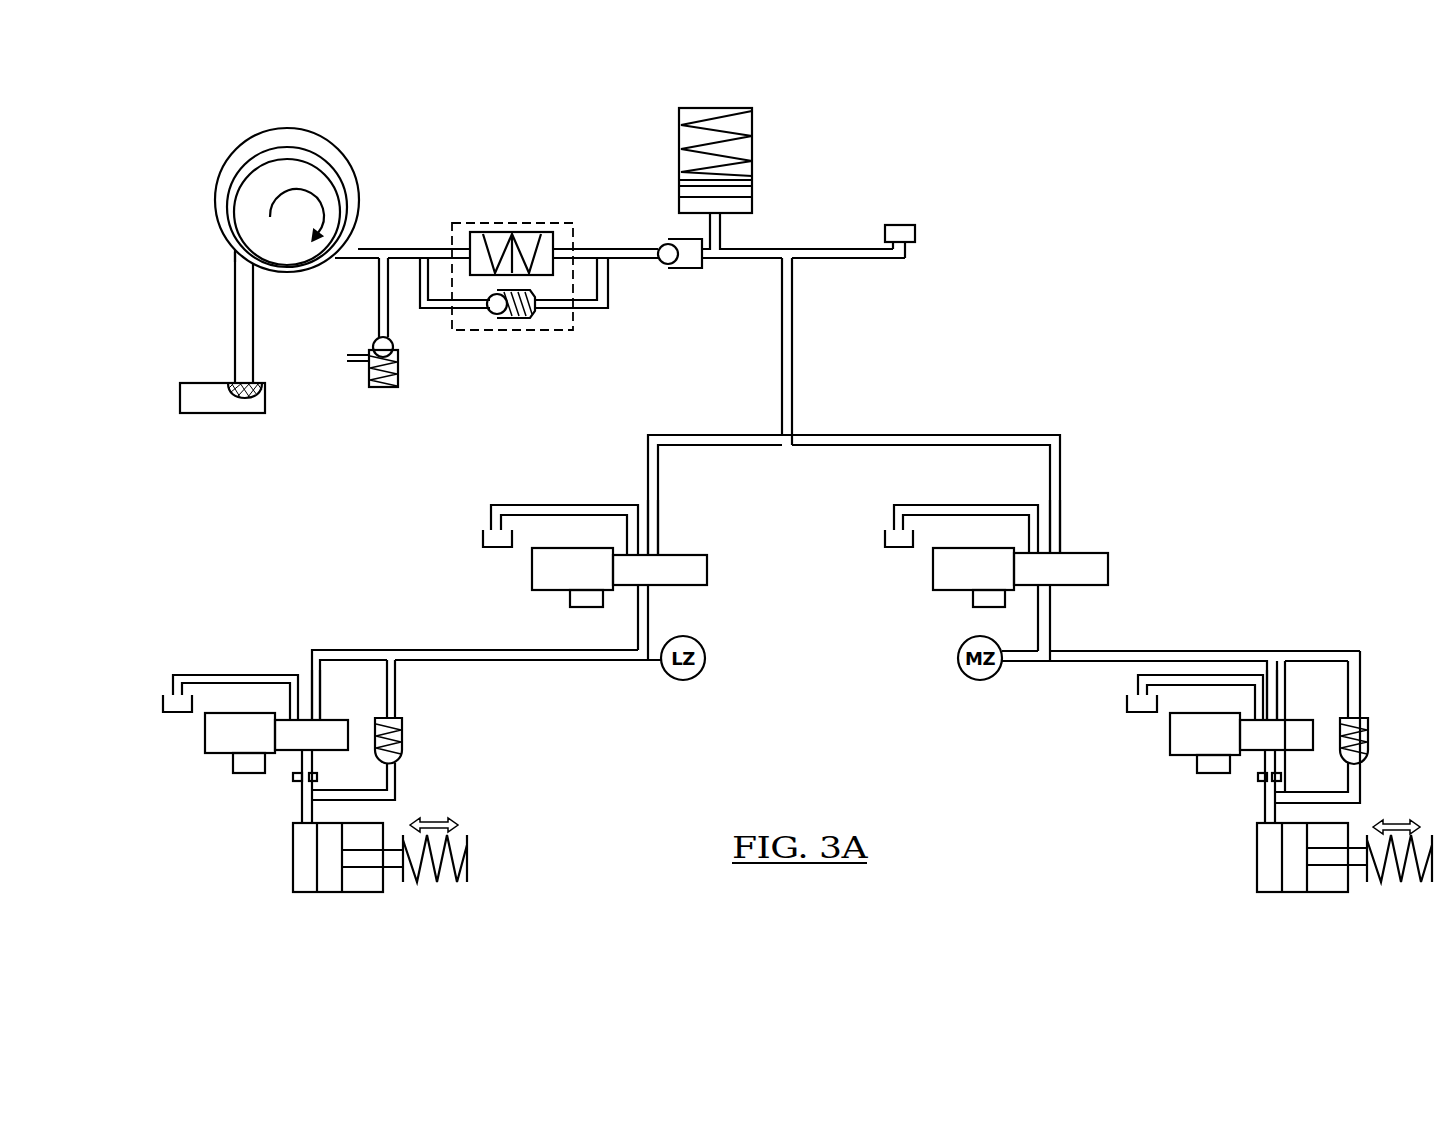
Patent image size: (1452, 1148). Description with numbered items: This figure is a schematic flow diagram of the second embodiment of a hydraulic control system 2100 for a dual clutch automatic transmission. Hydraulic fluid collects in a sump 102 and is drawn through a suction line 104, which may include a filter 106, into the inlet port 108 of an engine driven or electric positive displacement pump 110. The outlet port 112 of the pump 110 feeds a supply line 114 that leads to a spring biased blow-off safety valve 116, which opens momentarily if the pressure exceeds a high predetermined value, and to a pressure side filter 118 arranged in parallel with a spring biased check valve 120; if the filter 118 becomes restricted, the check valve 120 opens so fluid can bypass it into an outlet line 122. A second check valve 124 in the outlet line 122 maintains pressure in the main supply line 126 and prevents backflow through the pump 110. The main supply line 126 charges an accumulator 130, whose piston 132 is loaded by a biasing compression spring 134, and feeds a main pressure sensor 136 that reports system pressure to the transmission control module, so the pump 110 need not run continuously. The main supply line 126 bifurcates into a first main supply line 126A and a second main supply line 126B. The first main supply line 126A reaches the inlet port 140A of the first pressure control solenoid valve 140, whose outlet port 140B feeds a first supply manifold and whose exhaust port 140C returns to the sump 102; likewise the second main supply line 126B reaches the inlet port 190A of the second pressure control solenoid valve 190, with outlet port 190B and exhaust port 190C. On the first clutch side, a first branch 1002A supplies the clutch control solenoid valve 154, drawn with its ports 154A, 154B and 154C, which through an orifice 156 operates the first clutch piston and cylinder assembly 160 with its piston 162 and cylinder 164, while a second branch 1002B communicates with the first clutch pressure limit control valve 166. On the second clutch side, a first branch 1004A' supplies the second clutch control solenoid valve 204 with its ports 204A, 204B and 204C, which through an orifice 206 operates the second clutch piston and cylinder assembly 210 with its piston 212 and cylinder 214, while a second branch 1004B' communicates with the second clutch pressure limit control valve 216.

The hydraulic control system 2100 is at (1040, 167).
The sump 102 is at (207, 404).
The suction line 104 is at (247, 292).
The filter 106 is at (242, 381).
The inlet port 108 is at (240, 265).
The pump 110 is at (300, 142).
The outlet port 112 is at (362, 244).
The supply line 114 is at (423, 246).
The blow-off safety valve 116 is at (398, 348).
The pressure side filter 118 is at (510, 238).
The check valve 120 is at (516, 322).
The outlet line 122 is at (622, 246).
The second check valve 124 is at (687, 264).
The main supply line 126 is at (780, 378).
The first main supply line 126A is at (646, 456).
The second main supply line 126B is at (1046, 478).
The accumulator 130 is at (755, 148).
The piston 132 is at (725, 194).
The biasing compression spring 134 is at (708, 152).
The main pressure sensor 136 is at (896, 233).
The first pressure control solenoid valve 140 is at (570, 580).
The inlet port 140A is at (657, 552).
The outlet port 140B is at (651, 596).
The exhaust port 140C is at (632, 552).
The clutch control solenoid valve 154 is at (276, 751).
The valve port 154A is at (314, 715).
The valve port 154B is at (305, 755).
The valve port 154C is at (294, 714).
The orifice 156 is at (306, 782).
The first clutch piston and cylinder assembly 160 is at (320, 844).
The piston 162 is at (370, 823).
The cylinder 164 is at (292, 840).
The first clutch pressure limit control valve 166 is at (402, 757).
The second pressure control solenoid valve 190 is at (973, 580).
The inlet port 190A is at (1059, 552).
The outlet port 190B is at (1052, 598).
The exhaust port 190C is at (1032, 552).
The second clutch control solenoid valve 204 is at (1238, 751).
The valve port 204A is at (1279, 715).
The valve port 204B is at (1273, 755).
The valve port 204C is at (1258, 714).
The orifice 206 is at (1266, 782).
The second clutch piston and cylinder assembly 210 is at (1285, 844).
The piston 212 is at (1335, 823).
The cylinder 214 is at (1256, 840).
The second clutch pressure limit control valve 216 is at (1366, 758).
The first branch of first supply manifold 1002A is at (310, 655).
The second branch of first supply manifold 1002B is at (397, 667).
The first branch of second supply manifold 1004A' is at (1181, 665).
The second branch of second supply manifold 1004B' is at (1333, 707).